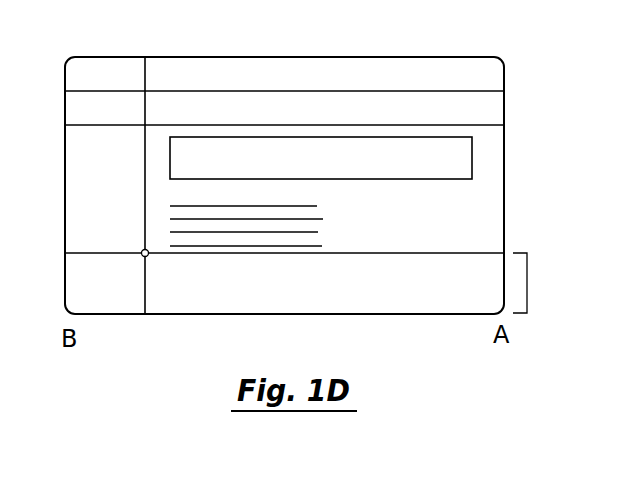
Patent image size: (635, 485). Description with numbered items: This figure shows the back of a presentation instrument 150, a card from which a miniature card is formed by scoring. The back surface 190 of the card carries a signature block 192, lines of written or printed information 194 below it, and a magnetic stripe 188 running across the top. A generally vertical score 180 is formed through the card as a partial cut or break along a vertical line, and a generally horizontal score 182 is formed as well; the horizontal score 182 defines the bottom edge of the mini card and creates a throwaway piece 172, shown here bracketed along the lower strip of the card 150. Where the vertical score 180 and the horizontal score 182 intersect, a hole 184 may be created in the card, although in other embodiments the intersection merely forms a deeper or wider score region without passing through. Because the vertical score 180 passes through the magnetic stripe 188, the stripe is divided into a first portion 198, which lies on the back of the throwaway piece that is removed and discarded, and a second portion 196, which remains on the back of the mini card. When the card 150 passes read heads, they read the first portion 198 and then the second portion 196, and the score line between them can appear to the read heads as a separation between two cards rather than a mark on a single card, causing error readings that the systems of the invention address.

The presentation instrument 150 is at (56, 90).
The throwaway piece 172 is at (527, 280).
The vertical score 180 is at (143, 282).
The horizontal score 182 is at (320, 254).
The hole 184 is at (151, 259).
The magnetic stripe 188 is at (254, 89).
The back surface 190 is at (473, 233).
The signature block 192 is at (480, 163).
The written or printed information 194 is at (323, 232).
The second portion 196 is at (478, 108).
The first portion 198 is at (100, 106).